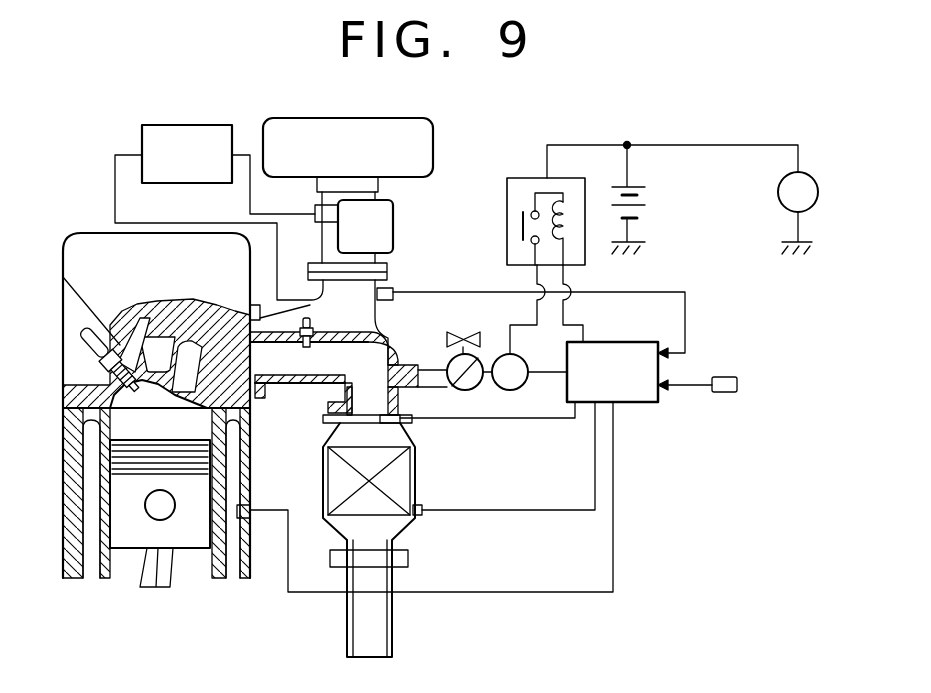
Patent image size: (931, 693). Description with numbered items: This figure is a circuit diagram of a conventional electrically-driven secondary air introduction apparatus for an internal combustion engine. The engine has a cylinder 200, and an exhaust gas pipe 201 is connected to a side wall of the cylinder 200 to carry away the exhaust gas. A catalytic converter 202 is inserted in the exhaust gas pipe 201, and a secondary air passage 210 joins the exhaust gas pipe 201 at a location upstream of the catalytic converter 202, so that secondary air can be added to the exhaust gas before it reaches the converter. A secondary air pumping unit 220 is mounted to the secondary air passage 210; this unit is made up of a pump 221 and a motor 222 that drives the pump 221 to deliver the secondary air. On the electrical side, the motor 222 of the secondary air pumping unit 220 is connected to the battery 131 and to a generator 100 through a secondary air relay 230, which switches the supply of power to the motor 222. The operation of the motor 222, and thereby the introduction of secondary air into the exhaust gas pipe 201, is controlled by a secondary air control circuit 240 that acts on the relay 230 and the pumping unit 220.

The cylinder 200 is at (90, 233).
The exhaust gas pipe 201 is at (290, 384).
The catalytic converter 202 is at (415, 491).
The secondary air passage 210 is at (412, 366).
The secondary air pumping unit 220 is at (516, 359).
The pump 221 is at (465, 390).
The motor 222 is at (526, 383).
The secondary air relay 230 is at (507, 213).
The secondary air control circuit 240 is at (632, 393).
The battery 131 is at (633, 178).
The generator 100 is at (820, 190).